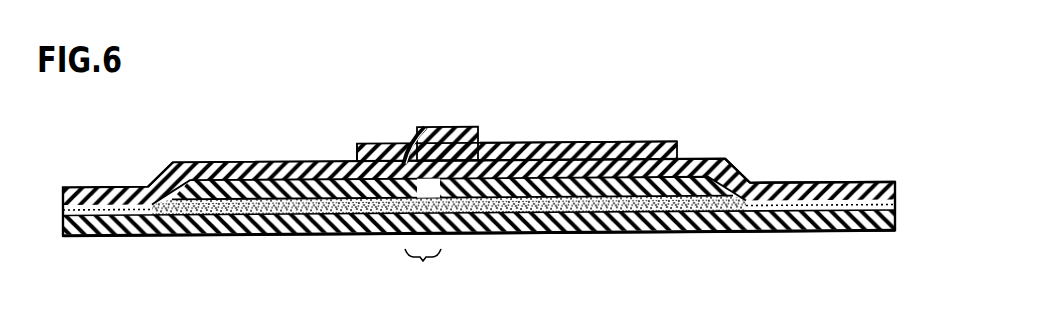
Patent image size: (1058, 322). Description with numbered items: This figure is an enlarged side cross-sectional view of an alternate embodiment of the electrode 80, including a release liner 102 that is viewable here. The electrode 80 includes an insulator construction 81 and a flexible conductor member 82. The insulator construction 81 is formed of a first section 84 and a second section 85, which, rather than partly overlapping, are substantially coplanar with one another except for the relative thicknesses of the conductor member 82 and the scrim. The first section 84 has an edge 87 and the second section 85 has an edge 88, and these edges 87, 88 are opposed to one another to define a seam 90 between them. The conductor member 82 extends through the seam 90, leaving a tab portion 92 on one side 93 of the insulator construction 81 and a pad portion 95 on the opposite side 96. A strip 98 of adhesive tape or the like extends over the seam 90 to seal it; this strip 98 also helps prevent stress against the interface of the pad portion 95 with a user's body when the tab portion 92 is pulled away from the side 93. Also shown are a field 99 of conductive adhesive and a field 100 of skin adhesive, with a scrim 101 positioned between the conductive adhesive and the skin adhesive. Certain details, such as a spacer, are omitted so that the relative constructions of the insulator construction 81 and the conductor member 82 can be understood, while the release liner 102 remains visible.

The electrode 80 is at (574, 59).
The insulator construction 81 is at (166, 168).
The conductor member 82 is at (656, 136).
The first section 84 is at (213, 161).
The second section 85 is at (838, 182).
The edge 87 is at (416, 126).
The edge 88 is at (467, 127).
The seam 90 is at (424, 274).
The tab portion 92 is at (568, 142).
The side 93 is at (725, 159).
The pad portion 95 is at (352, 236).
The opposite side 96 is at (142, 238).
The strip 98 is at (370, 143).
The field of conductive adhesive 99 is at (230, 237).
The field of skin adhesive 100 is at (177, 237).
The scrim 101 is at (276, 237).
The release liner 102 is at (841, 232).